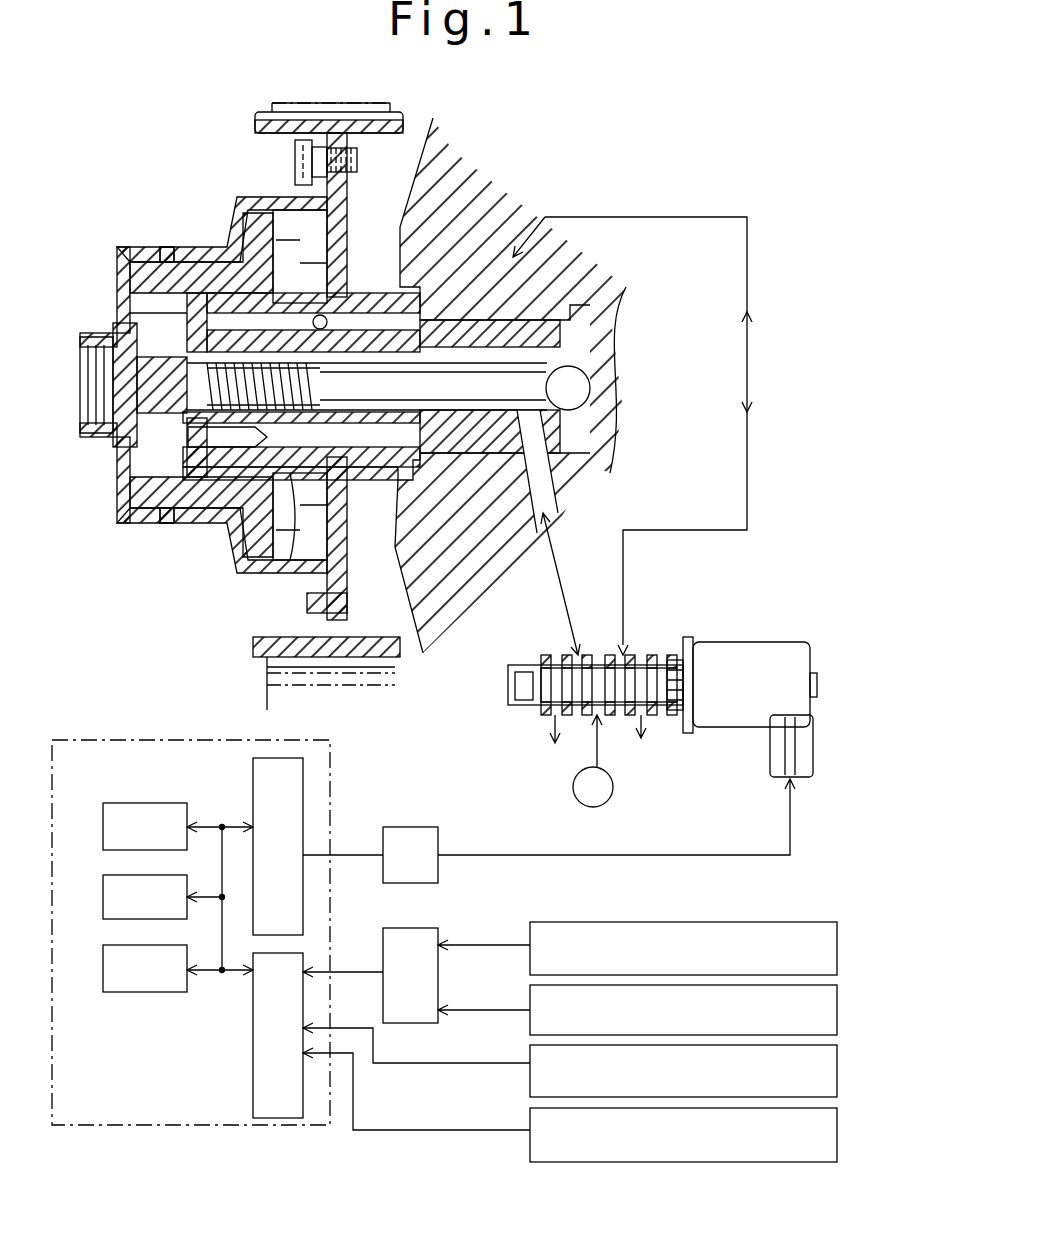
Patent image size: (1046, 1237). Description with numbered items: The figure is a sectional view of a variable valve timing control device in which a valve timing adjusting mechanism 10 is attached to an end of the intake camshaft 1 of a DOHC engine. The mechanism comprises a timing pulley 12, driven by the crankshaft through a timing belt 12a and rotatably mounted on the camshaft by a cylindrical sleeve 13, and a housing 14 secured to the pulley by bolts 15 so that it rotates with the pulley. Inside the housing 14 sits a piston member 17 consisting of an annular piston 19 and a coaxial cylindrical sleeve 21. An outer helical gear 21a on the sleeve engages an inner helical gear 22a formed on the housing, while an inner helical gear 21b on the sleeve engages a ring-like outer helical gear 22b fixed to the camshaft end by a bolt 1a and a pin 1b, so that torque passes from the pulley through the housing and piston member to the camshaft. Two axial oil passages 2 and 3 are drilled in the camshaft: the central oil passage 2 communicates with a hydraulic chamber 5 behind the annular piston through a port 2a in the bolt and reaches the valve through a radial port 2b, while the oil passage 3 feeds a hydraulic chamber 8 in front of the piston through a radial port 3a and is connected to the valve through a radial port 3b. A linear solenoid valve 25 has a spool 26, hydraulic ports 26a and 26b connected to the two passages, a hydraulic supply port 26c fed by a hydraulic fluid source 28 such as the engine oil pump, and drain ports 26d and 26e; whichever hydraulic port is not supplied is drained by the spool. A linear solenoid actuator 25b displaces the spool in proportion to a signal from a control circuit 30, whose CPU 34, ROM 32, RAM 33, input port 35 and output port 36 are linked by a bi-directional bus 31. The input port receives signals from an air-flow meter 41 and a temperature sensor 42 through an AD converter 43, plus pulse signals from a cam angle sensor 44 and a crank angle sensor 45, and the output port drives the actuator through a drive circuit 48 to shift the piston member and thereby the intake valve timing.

The valve timing adjusting mechanism 10 is at (250, 265).
The intake camshaft 1 is at (628, 380).
The bolt 1a is at (87, 317).
The pin 1b is at (102, 496).
The oil passage 2 is at (388, 509).
The port 2a is at (88, 463).
The port 2b is at (551, 471).
The oil passage 3 is at (510, 385).
The radial port 3a is at (457, 291).
The radial port 3b is at (632, 436).
The hydraulic chamber 5 is at (201, 244).
The hydraulic chamber 8 is at (326, 253).
The timing pulley 12 is at (328, 406).
The timing belt 12a is at (288, 692).
The cylindrical sleeve 13 is at (282, 537).
The housing 14 is at (201, 498).
The bolts 15 is at (295, 162).
The piston member 17 is at (222, 547).
The annular piston 19 is at (222, 210).
The cylindrical sleeve 21 is at (130, 284).
The outer helical gear 21a is at (120, 211).
The inner helical gear 22a is at (167, 254).
The inner helical gear 21b is at (240, 500).
The ring-like outer helical gear 22b is at (167, 515).
The linear solenoid valve 25 is at (742, 676).
The linear solenoid actuator 25b is at (751, 684).
The spool 26 is at (586, 715).
The hydraulic port 26a is at (548, 631).
The hydraulic port 26b is at (647, 631).
The hydraulic supply port 26c is at (628, 747).
The drain port 26d is at (543, 750).
The drain port 26e is at (682, 742).
The hydraulic fluid source 28 is at (627, 796).
The control circuit 30 is at (191, 953).
The bi-directional bus 31 is at (220, 878).
The read-only-memory (ROM) 32 is at (145, 812).
The random-access-memory (RAM) 33 is at (123, 897).
The central processing unit (CPU) 34 is at (123, 968).
The input port 35 is at (249, 1035).
The output port 36 is at (254, 841).
The air-flow meter 41 is at (637, 928).
The temperature sensor 42 is at (637, 1011).
The AD converter 43 is at (391, 957).
The cam angle sensor 44 is at (570, 1060).
The crank angle sensor 45 is at (570, 1107).
The drive circuit 48 is at (549, 831).